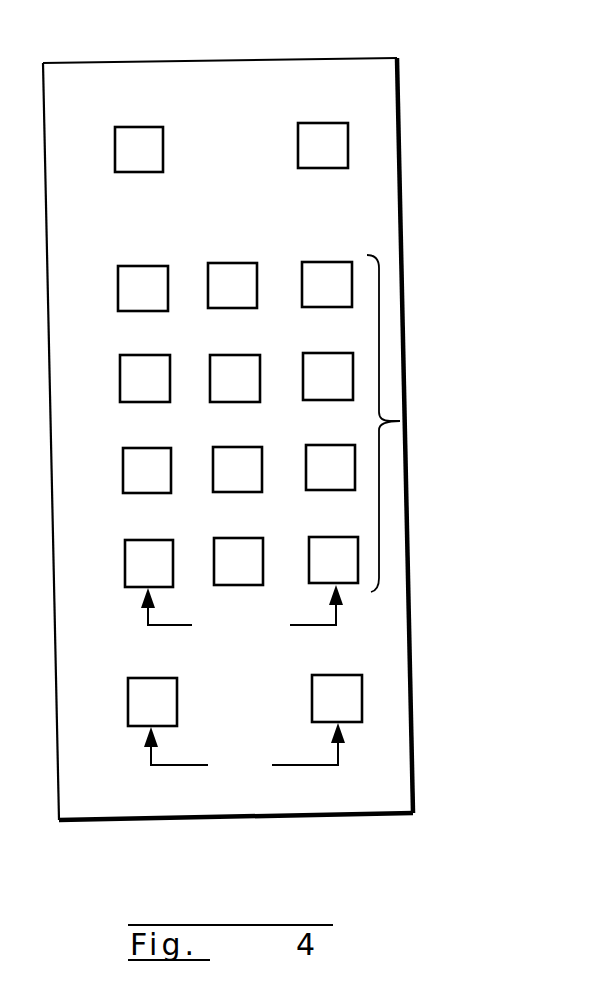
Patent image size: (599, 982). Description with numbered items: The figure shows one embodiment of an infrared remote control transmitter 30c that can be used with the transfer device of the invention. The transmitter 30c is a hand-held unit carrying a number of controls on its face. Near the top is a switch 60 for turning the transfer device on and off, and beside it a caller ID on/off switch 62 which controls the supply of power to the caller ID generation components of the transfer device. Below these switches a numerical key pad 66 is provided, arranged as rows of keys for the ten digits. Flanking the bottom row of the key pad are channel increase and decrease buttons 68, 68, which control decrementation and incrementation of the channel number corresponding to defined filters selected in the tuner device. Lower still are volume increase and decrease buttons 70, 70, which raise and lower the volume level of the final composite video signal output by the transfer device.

The infrared remote control transmitter 30c is at (428, 111).
The switch 60 is at (141, 127).
The caller ID on/off switch 62 is at (326, 123).
The numerical key pad 66 is at (412, 421).
The channel increase and decrease buttons 68 is at (125, 560).
The volume increase and decrease buttons 70 is at (127, 702).